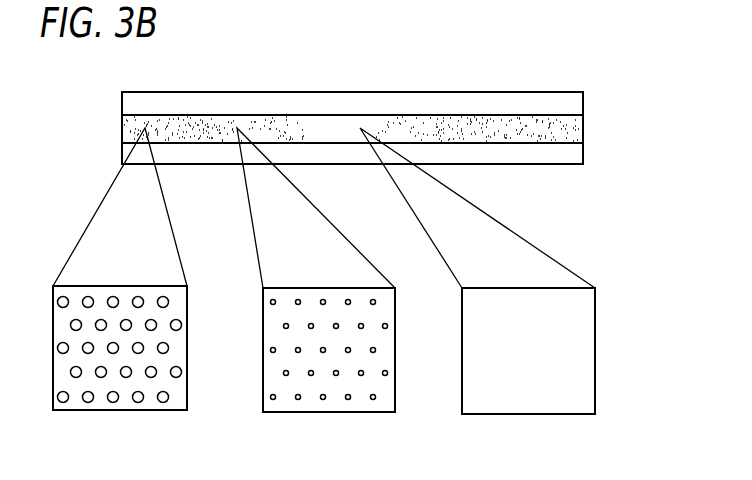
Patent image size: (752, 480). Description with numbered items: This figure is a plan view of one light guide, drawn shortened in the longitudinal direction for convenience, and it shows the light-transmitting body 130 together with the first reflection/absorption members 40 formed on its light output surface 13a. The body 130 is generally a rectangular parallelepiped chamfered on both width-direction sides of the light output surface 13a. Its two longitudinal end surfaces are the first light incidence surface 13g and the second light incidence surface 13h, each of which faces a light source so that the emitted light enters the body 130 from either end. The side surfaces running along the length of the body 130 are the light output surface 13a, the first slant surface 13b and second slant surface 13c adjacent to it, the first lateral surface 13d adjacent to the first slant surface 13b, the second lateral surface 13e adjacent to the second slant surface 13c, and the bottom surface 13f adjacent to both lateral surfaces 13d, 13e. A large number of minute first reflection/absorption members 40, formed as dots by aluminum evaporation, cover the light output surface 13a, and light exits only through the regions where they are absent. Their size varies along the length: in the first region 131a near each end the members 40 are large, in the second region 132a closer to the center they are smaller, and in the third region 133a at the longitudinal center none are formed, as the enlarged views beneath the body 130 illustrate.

The body 130 is at (585, 93).
The light output surface 13a is at (572, 128).
The first slant surface 13b is at (523, 102).
The second slant surface 13c is at (553, 160).
The first lateral surface 13d is at (472, 92).
The second lateral surface 13e is at (500, 168).
The bottom surface 13f is at (321, 46).
The first light incidence surface 13g is at (585, 135).
The second light incidence surface 13h is at (122, 122).
The first region 131a is at (145, 128).
The second region 132a is at (237, 128).
The third region 133a is at (360, 128).
The first reflection/absorption members 40 is at (87, 400).